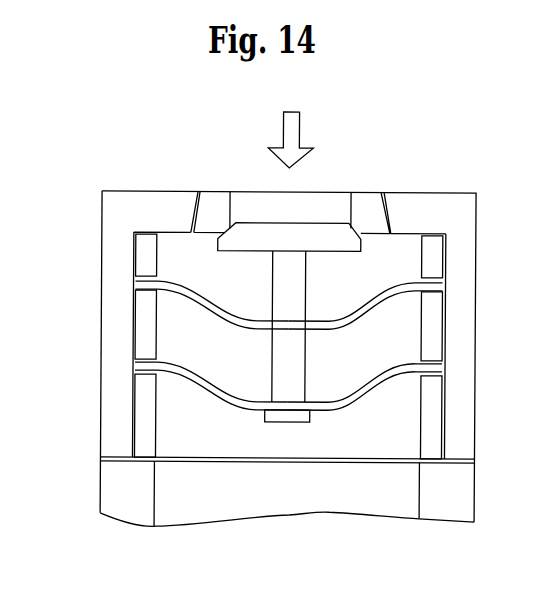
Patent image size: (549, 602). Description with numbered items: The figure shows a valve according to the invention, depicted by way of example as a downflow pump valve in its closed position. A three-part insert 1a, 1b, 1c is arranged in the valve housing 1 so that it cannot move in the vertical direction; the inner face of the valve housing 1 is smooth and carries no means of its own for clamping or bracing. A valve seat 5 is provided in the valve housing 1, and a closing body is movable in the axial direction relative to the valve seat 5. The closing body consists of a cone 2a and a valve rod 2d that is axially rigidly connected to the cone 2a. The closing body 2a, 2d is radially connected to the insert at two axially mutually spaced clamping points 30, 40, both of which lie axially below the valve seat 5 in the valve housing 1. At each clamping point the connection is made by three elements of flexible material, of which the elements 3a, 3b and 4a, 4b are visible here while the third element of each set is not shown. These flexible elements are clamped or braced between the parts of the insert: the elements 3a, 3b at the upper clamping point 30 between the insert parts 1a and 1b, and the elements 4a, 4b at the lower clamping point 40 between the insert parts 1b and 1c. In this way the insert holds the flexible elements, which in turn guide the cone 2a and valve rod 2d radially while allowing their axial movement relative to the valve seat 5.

The valve housing 1 is at (131, 220).
The insert part 1a is at (143, 248).
The insert part 1b is at (143, 343).
The insert part 1c is at (143, 428).
The cone 2a is at (330, 233).
The valve rod 2d is at (292, 287).
The element consisting of flexible material 3a is at (408, 287).
The element consisting of flexible material 3b is at (185, 291).
The element consisting of flexible material 4a is at (336, 399).
The element consisting of flexible material 4b is at (182, 373).
The valve seat 5 is at (216, 208).
The clamping point 30 is at (242, 342).
The clamping point 40 is at (273, 412).